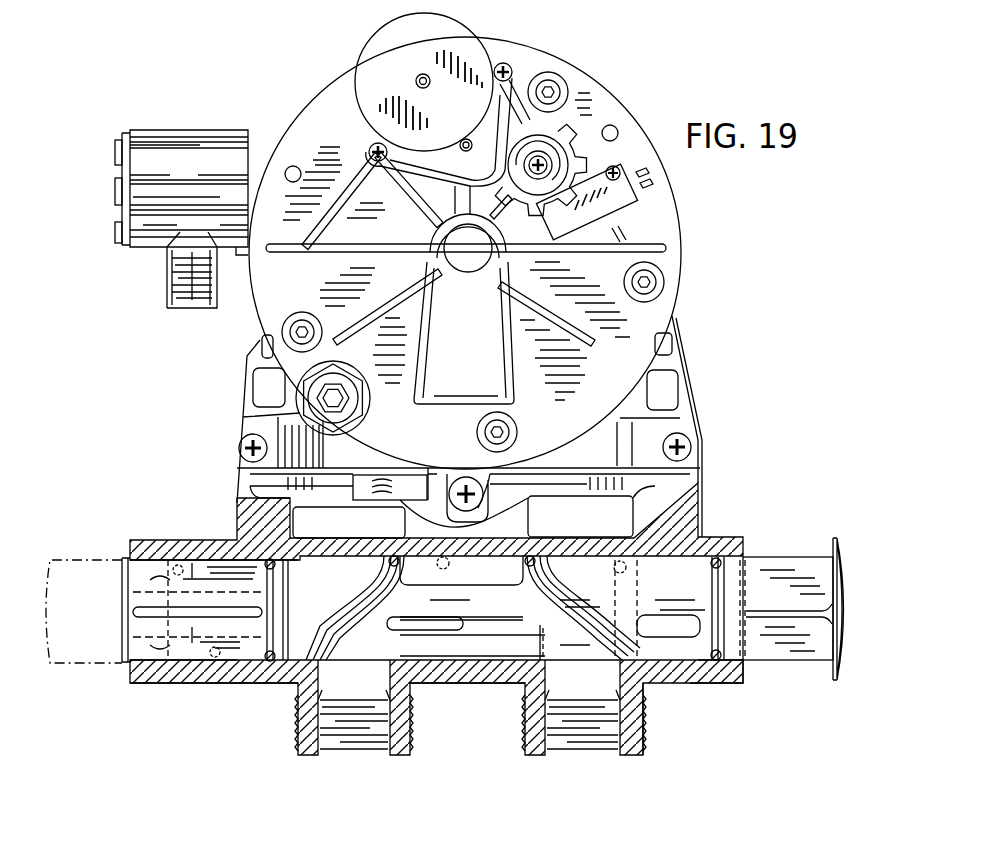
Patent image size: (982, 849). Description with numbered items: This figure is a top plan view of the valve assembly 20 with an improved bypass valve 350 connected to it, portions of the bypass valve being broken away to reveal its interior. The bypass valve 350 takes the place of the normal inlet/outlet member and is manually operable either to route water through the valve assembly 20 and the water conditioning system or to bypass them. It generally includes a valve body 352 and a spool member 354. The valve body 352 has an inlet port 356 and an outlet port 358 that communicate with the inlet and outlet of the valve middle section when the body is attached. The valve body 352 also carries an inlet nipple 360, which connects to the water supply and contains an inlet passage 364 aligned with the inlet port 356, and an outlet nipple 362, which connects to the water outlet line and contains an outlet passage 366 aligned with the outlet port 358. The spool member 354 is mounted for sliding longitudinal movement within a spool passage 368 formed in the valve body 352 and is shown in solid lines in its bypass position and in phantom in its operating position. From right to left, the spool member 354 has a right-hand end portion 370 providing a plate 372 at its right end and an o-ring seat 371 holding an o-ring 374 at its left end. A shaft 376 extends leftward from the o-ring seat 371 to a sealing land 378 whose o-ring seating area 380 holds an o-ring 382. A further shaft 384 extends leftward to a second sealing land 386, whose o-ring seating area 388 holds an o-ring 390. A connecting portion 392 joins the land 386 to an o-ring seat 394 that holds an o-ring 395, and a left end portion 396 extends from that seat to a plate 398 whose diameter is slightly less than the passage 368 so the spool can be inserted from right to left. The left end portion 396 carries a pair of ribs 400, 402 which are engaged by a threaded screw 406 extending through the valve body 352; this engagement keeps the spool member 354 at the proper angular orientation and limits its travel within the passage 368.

The valve assembly 20 is at (770, 270).
The bypass valve 350 is at (714, 712).
The valve body 352 is at (700, 501).
The spool member 354 is at (798, 540).
The inlet port 356 is at (554, 522).
The outlet port 358 is at (327, 530).
The inlet nipple 360 is at (643, 737).
The outlet nipple 362 is at (297, 738).
The inlet passage 364 is at (592, 738).
The outlet passage 366 is at (366, 742).
The spool passage 368 is at (462, 652).
The right-hand end portion 370 is at (782, 662).
The o-ring seat 371 is at (696, 663).
The plate 372 is at (845, 633).
The o-ring 374 is at (727, 566).
The shaft 376 is at (670, 662).
The sealing land 378 is at (607, 646).
The o-ring seating area 380 is at (550, 592).
The o-ring 382 is at (552, 576).
The shaft 384 is at (452, 586).
The sealing land 386 is at (338, 636).
The o-ring seating area 388 is at (317, 638).
The o-ring 390 is at (288, 667).
The connecting portion 392 is at (287, 625).
The o-ring seat 394 is at (240, 665).
The o-ring 395 is at (247, 560).
The left end portion 396 is at (147, 678).
The plate 398 is at (84, 611).
The rib 400 is at (128, 559).
The rib 402 is at (128, 658).
The threaded screw 406 is at (128, 588).